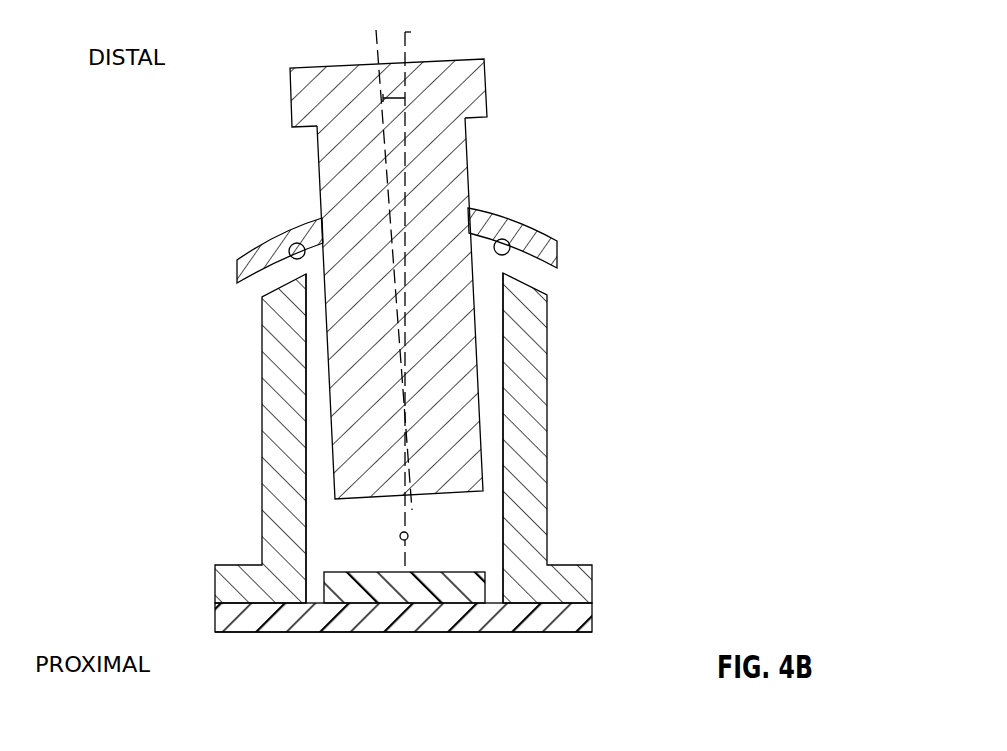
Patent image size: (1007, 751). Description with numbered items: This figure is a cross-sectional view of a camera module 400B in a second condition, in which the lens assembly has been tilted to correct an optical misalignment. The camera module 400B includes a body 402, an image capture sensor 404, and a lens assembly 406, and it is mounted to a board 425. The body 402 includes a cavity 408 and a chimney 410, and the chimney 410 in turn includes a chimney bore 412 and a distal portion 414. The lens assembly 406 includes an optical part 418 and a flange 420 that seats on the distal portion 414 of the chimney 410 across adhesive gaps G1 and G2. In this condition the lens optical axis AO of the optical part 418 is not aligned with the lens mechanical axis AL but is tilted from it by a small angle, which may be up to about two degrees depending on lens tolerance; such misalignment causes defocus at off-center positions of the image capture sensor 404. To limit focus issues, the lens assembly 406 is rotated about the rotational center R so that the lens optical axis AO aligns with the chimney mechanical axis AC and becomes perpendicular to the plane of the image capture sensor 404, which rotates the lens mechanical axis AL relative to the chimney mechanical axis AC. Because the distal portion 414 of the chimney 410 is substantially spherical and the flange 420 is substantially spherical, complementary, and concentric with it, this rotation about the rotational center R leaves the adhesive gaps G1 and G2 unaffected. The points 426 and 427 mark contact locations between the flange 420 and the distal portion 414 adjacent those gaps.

The camera module 400B is at (666, 90).
The body 402 is at (197, 612).
The image capture sensor 404 is at (485, 593).
The lens assembly 406 is at (481, 157).
The cavity 408 is at (337, 666).
The chimney 410 is at (549, 432).
The chimney bore 412 is at (495, 533).
The distal portion 414 is at (267, 320).
The optical part 418 is at (487, 78).
The flange 420 is at (549, 232).
The board 425 is at (568, 633).
The first contact point 426 is at (297, 243).
The second contact point 427 is at (503, 239).
The adhesive gap G1 is at (246, 295).
The adhesive gap G2 is at (547, 283).
The lens mechanical axis AL is at (378, 51).
The lens optical axis AO is at (412, 33).
The chimney mechanical axis AC is at (406, 71).
The rotational center R is at (401, 540).